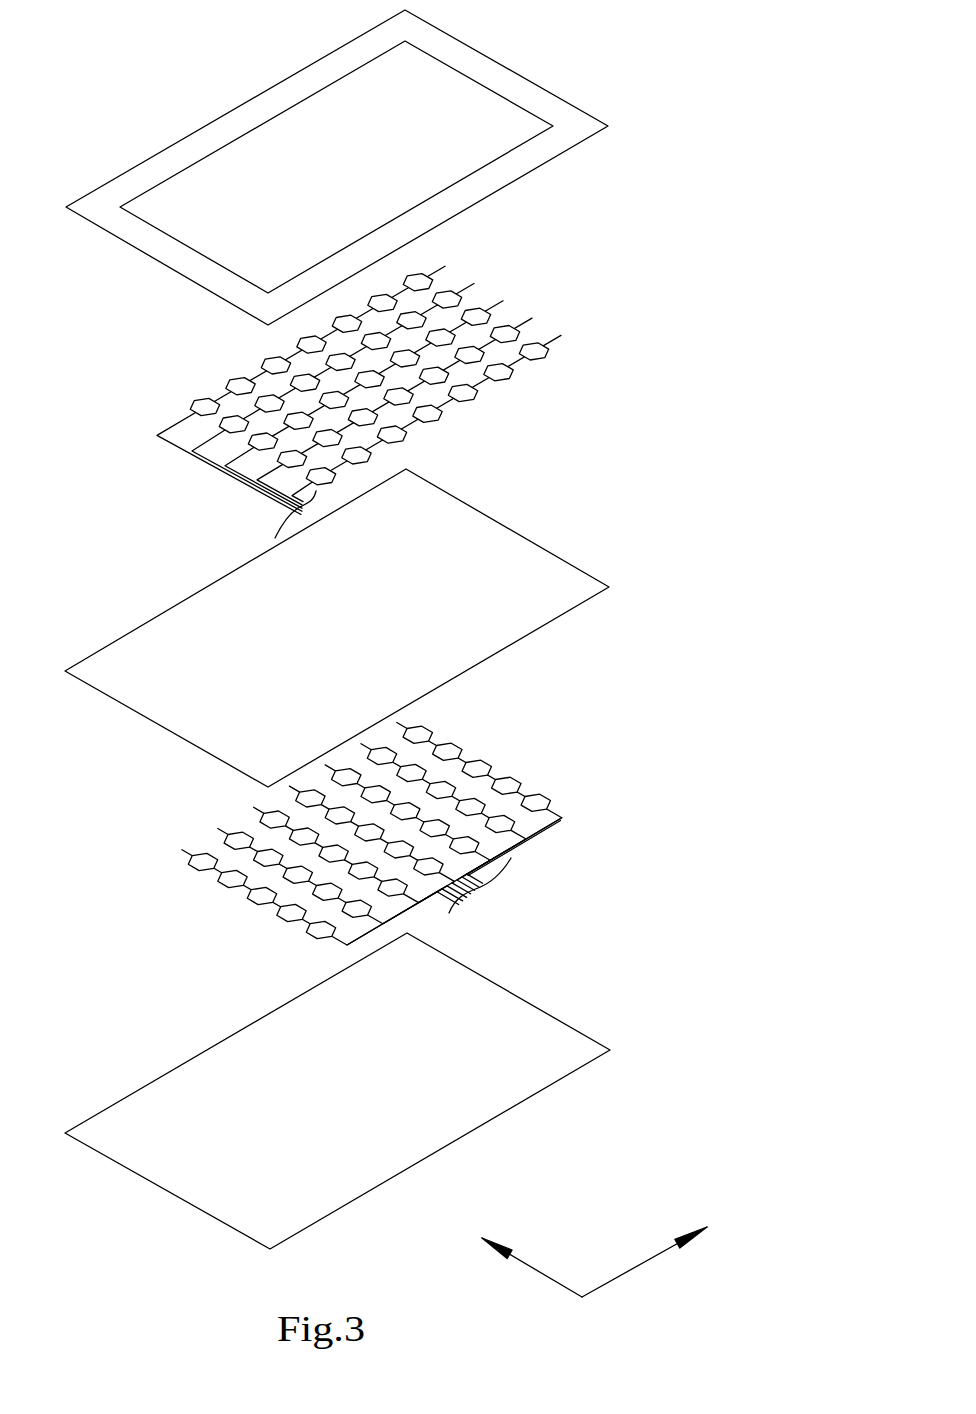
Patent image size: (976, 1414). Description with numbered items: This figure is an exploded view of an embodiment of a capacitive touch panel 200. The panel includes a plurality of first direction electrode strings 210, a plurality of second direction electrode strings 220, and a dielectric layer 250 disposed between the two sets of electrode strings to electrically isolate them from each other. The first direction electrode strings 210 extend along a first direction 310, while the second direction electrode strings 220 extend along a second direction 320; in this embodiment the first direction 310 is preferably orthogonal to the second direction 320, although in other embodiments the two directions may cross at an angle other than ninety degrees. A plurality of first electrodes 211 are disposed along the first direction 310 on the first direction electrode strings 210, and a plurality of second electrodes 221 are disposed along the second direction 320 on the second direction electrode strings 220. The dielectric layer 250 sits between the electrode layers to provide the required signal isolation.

The capacitive touch panel 200 is at (67, 28).
The first direction electrode strings 210 is at (526, 321).
The first electrodes 211 is at (542, 350).
The second direction electrode strings 220 is at (440, 736).
The second electrodes 221 is at (447, 752).
The dielectric layer 250 is at (530, 560).
The first direction 310 is at (662, 1246).
The second direction 320 is at (526, 1252).